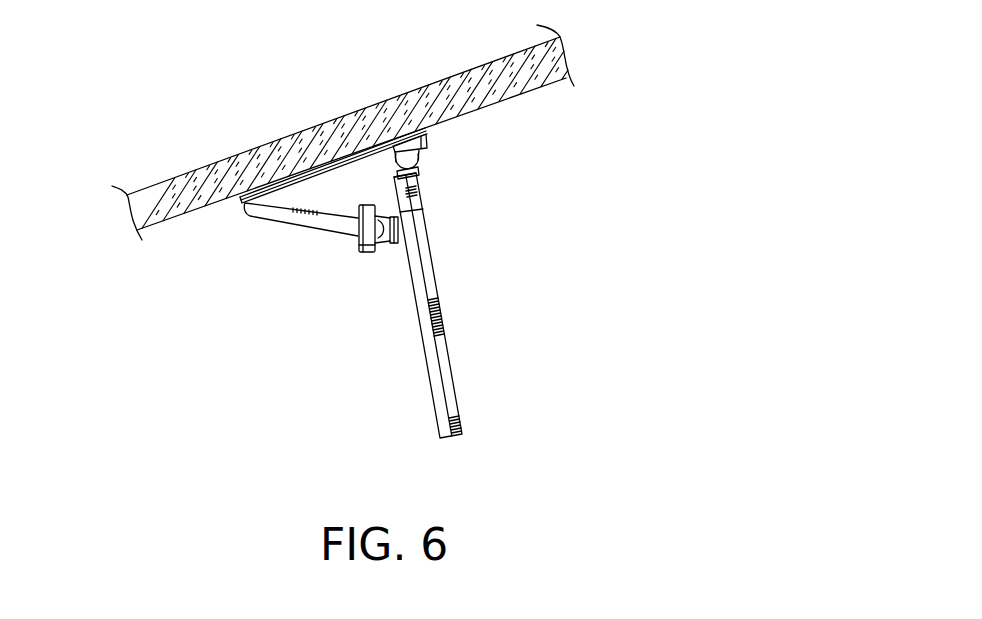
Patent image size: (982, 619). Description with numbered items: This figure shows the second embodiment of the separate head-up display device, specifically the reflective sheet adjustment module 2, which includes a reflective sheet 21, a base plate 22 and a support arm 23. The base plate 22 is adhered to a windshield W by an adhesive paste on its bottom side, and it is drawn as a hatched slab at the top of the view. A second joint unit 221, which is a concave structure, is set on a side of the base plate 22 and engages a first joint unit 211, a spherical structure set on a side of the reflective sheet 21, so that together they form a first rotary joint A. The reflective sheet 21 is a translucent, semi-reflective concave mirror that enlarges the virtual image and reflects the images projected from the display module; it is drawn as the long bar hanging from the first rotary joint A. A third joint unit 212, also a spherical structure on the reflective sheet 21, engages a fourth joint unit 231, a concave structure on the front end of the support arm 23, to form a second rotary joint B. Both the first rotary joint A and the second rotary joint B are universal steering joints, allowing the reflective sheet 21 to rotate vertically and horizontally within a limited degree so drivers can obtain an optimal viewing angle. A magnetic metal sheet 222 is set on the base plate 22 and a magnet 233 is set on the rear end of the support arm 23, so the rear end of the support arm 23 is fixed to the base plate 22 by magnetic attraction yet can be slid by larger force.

The windshield W is at (317, 125).
The reflective sheet adjustment module 2 is at (453, 248).
The reflective sheet 21 is at (440, 338).
The first joint unit 211 is at (413, 168).
The third joint unit 212 is at (397, 250).
The base plate 22 is at (427, 132).
The second joint unit 221 is at (418, 153).
The magnetic metal sheet 222 is at (340, 161).
The support arm 23 is at (301, 207).
The fourth joint unit 231 is at (382, 252).
The magnet 233 is at (297, 185).
The first rotary joint A is at (563, 183).
The second rotary joint B is at (323, 343).